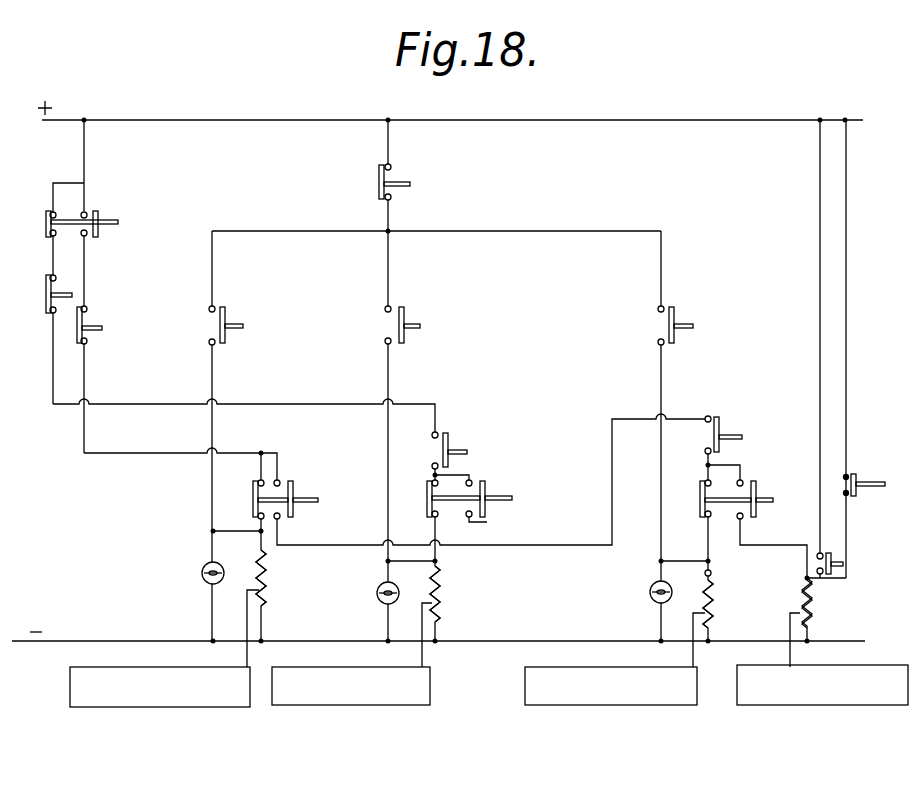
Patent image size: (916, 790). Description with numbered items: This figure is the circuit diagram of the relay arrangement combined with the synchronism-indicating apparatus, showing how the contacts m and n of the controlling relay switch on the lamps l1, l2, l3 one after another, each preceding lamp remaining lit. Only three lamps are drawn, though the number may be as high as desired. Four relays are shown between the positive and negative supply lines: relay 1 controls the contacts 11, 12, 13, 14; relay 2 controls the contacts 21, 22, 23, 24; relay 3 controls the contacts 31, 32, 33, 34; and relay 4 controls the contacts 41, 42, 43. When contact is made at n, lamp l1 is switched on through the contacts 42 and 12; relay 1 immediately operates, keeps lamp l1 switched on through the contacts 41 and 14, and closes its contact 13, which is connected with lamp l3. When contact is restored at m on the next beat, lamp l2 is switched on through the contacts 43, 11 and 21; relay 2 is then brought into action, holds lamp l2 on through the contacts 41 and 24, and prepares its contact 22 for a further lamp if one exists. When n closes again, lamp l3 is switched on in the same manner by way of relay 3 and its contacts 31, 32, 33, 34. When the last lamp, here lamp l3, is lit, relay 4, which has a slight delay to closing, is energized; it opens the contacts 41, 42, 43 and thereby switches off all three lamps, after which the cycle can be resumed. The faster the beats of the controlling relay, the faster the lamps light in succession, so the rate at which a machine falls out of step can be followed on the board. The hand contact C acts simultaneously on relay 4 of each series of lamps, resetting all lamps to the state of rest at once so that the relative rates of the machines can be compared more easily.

The relay 1 is at (174, 628).
The relay 2 is at (365, 635).
The relay 3 is at (629, 637).
The relay 4 is at (822, 642).
The contact 11 is at (451, 450).
The contact 12 is at (262, 509).
The contact 13 is at (296, 509).
The contact 14 is at (218, 325).
The contact 21 is at (447, 509).
The contact 22 is at (489, 501).
The contact 23 is at (723, 426).
The contact 24 is at (402, 334).
The contact 31 is at (832, 554).
The contact 32 is at (719, 510).
The contact 33 is at (755, 510).
The contact 34 is at (675, 317).
The contact 41 is at (395, 184).
The contact 42 is at (93, 325).
The contact 43 is at (47, 294).
The contact m is at (76, 215).
The contact n is at (92, 214).
The hand contact C is at (865, 476).
The lamp l1 is at (201, 577).
The lamp l2 is at (378, 595).
The lamp l3 is at (648, 594).